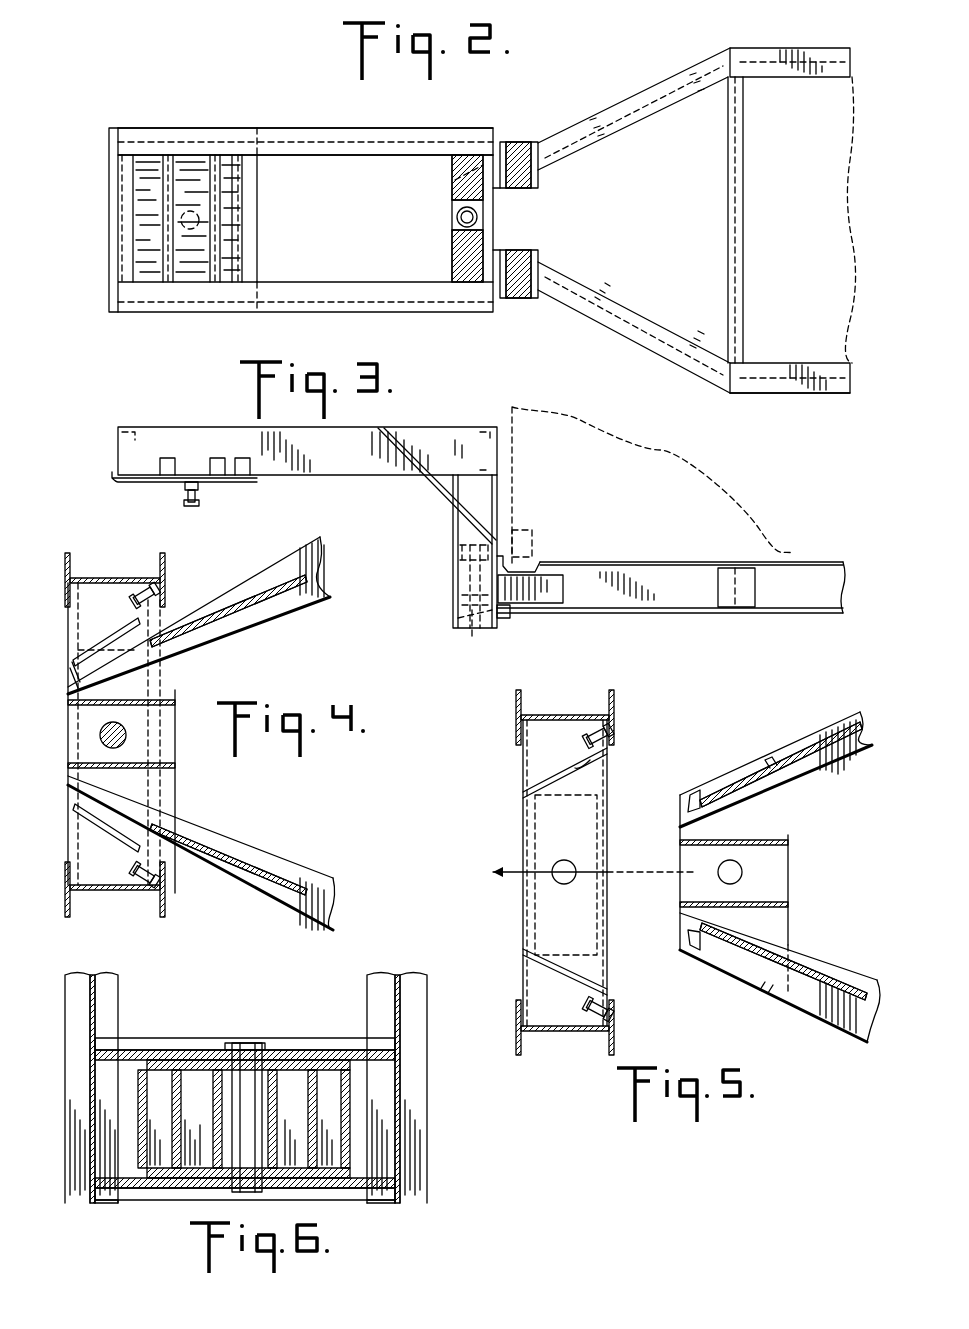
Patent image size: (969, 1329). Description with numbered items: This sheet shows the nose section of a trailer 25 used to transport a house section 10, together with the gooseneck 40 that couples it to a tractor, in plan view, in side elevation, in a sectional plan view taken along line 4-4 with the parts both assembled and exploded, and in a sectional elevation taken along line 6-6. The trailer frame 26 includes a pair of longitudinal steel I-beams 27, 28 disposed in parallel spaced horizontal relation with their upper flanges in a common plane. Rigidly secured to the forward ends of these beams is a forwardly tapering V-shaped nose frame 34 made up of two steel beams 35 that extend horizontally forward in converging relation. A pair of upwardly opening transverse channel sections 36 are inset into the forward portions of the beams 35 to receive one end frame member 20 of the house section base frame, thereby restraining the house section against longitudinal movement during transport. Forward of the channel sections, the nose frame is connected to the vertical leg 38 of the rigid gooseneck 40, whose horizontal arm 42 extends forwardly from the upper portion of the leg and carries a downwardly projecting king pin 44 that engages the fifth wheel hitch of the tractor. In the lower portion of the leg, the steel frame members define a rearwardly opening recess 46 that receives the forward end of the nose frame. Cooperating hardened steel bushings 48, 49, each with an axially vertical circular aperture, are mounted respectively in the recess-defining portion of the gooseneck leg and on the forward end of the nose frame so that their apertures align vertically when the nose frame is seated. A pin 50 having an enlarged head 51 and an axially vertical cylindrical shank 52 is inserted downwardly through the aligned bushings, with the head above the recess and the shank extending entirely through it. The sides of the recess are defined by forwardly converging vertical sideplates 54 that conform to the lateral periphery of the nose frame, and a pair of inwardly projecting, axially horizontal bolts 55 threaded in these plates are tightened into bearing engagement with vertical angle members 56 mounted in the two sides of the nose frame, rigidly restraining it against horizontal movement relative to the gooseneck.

In FIG. 3, the house section 10 is at (512, 450).
In FIG. 3, the end frame member 20 is at (535, 536).
In FIG. 2, the trailer 25 is at (736, 48).
In FIG. 3, the trailer 25 is at (801, 535).
In FIG. 2, the frame 26 is at (820, 363).
In FIG. 3, the frame 26 is at (826, 560).
In FIG. 2, the longitudinal steel I-beam 27 is at (776, 386).
In FIG. 2, the longitudinal steel I-beam 28 is at (808, 50).
In FIG. 2, the nose frame 34 is at (615, 134).
In FIG. 3, the nose frame 34 is at (677, 563).
In FIG. 4, the nose frame 34 is at (270, 568).
In FIG. 5, the nose frame 34 is at (840, 720).
In FIG. 2, the steel beam 35 is at (667, 88).
In FIG. 3, the steel beam 35 is at (645, 612).
In FIG. 4, the steel beam 35 is at (300, 600).
In FIG. 5, the steel beam 35 is at (820, 785).
In FIG. 6, the steel beam 35 is at (160, 1178).
In FIG. 2, the transverse channel section 36 is at (538, 185).
In FIG. 3, the transverse channel section 36 is at (530, 575).
In FIG. 2, the vertical leg 38 is at (452, 262).
In FIG. 3, the vertical leg 38 is at (453, 515).
In FIG. 4, the vertical leg 38 is at (118, 578).
In FIG. 5, the vertical leg 38 is at (550, 1031).
In FIG. 6, the vertical leg 38 is at (405, 1005).
In FIG. 2, the gooseneck 40 is at (258, 233).
In FIG. 3, the gooseneck 40 is at (424, 426).
In FIG. 4, the gooseneck 40 is at (66, 563).
In FIG. 5, the gooseneck 40 is at (508, 733).
In FIG. 2, the horizontal arm 42 is at (322, 152).
In FIG. 3, the horizontal arm 42 is at (292, 460).
In FIG. 2, the king pin 44 is at (130, 210).
In FIG. 3, the king pin 44 is at (182, 494).
In FIG. 2, the recess 46 is at (452, 187).
In FIG. 3, the recess 46 is at (455, 613).
In FIG. 4, the recess 46 is at (68, 665).
In FIG. 5, the recess 46 is at (580, 762).
In FIG. 2, the bushing 48 is at (452, 238).
In FIG. 3, the bushing 48 is at (456, 542).
In FIG. 5, the bushing 48 is at (535, 825).
In FIG. 6, the bushing 48 is at (300, 1050).
In FIG. 3, the bushing 49 is at (510, 618).
In FIG. 4, the bushing 49 is at (168, 752).
In FIG. 5, the bushing 49 is at (692, 885).
In FIG. 6, the bushing 49 is at (200, 1082).
In FIG. 2, the pin 50 is at (457, 212).
In FIG. 3, the pin 50 is at (455, 597).
In FIG. 6, the pin 50 is at (245, 1127).
In FIG. 3, the head 51 is at (515, 530).
In FIG. 6, the head 51 is at (250, 1043).
In FIG. 3, the shank 52 is at (462, 635).
In FIG. 4, the shank 52 is at (100, 730).
In FIG. 6, the shank 52 is at (262, 1080).
In FIG. 4, the sideplate 54 is at (118, 638).
In FIG. 5, the sideplate 54 is at (540, 772).
In FIG. 4, the bolt 55 is at (155, 600).
In FIG. 5, the bolt 55 is at (608, 728).
In FIG. 4, the vertical angle member 56 is at (205, 625).
In FIG. 5, the vertical angle member 56 is at (768, 760).
In FIG. 3, the section line 4- 4 is at (440, 592).
In FIG. 3, the section line 6- 6 is at (475, 652).